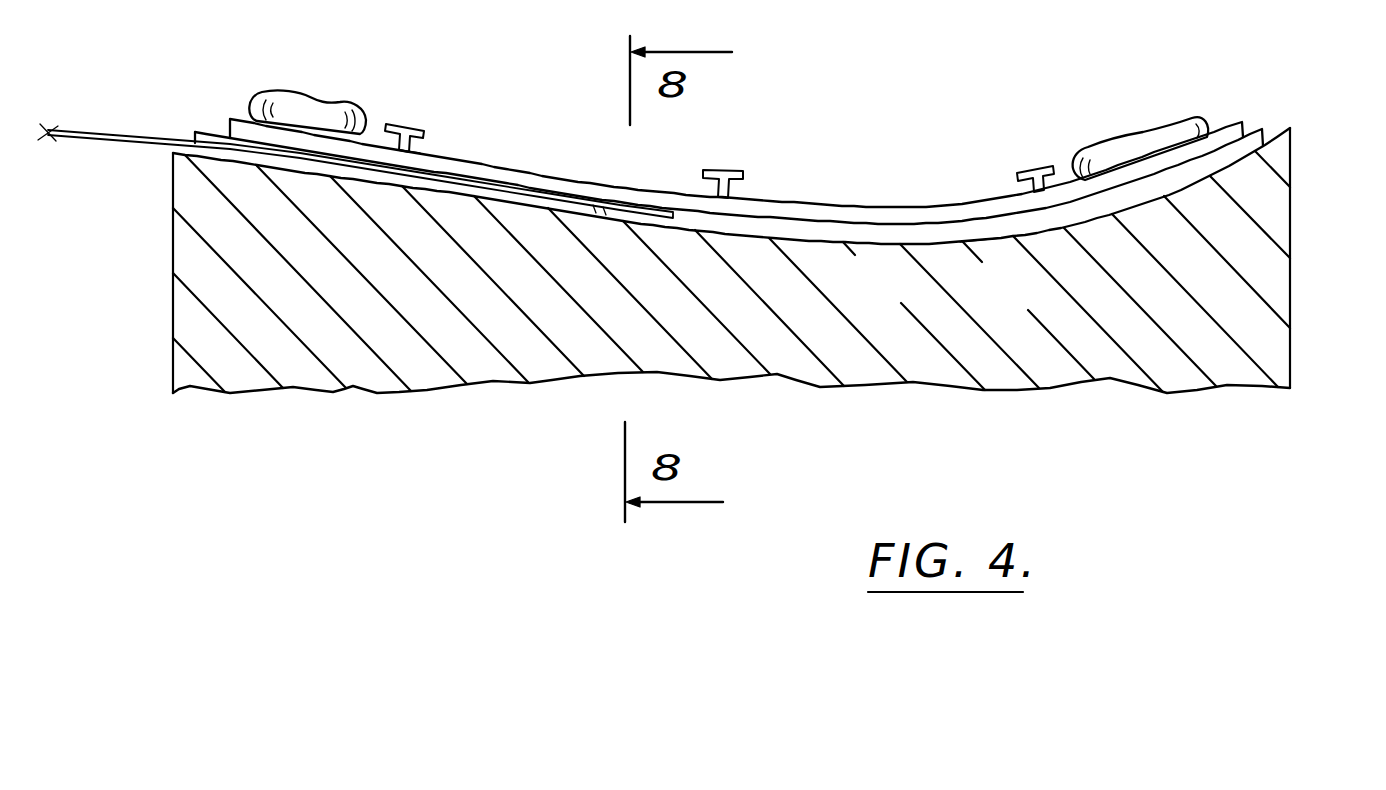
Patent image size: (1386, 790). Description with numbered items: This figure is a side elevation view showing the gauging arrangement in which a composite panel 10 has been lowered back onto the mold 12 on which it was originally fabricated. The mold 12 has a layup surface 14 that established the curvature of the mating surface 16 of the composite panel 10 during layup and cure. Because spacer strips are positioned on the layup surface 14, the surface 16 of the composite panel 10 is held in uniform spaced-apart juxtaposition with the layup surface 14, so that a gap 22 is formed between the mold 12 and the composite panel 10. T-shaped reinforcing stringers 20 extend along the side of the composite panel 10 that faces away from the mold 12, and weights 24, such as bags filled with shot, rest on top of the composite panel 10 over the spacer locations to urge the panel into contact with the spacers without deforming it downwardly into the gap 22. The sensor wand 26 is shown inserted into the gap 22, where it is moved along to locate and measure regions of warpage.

The composite panel 10 is at (833, 206).
The mold 12 is at (1266, 336).
The layup surface 14 is at (917, 228).
The surface of composite panel 16 is at (863, 226).
The reinforcing stringers 20 is at (404, 126).
The gap 22 is at (993, 228).
The weights 24 is at (318, 102).
The sensor wand 26 is at (88, 131).